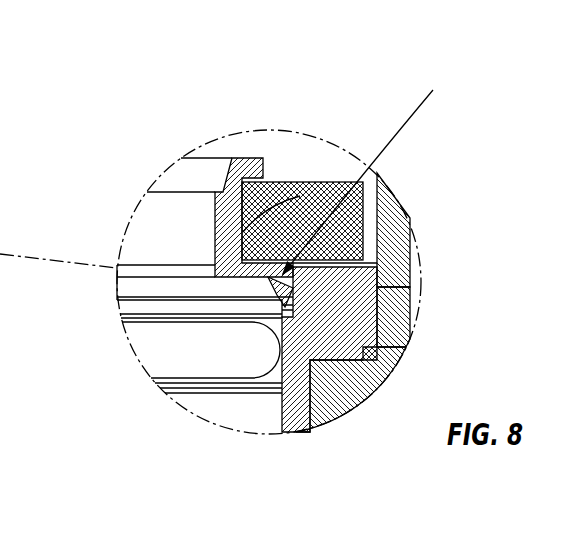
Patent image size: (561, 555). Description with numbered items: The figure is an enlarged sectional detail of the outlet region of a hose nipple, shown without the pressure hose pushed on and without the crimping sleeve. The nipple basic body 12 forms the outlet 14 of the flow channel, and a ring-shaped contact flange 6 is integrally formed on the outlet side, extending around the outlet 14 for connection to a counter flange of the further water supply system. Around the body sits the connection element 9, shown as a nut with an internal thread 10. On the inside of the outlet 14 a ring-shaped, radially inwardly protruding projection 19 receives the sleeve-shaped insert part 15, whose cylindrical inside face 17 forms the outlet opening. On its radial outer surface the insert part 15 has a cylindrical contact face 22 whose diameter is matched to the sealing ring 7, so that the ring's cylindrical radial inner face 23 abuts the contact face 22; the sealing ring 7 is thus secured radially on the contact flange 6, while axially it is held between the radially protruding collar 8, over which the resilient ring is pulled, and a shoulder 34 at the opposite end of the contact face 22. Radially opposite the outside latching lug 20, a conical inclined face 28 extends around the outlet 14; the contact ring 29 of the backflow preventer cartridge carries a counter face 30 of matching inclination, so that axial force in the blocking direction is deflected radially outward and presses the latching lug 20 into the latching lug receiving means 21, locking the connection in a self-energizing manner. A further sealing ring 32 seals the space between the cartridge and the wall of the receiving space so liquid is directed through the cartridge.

The contact flange 6 is at (378, 282).
The sealing ring 7 is at (305, 183).
The collar 8 is at (262, 168).
The connection element 9 is at (400, 314).
The internal thread 10 is at (385, 235).
The nipple basic body 12 is at (293, 413).
The outlet 14 is at (158, 247).
The insert part 15 is at (218, 192).
The inside face 17 is at (168, 192).
The projection 19 is at (340, 263).
The latching lug 20 is at (258, 303).
The latching lug receiving means 21 is at (310, 300).
The contact face 22 is at (285, 183).
The radial inner face 23 is at (306, 182).
The inclined face 28 is at (267, 285).
The contact ring 29 is at (125, 322).
The counter face 30 is at (117, 287).
The sealing ring 32 is at (213, 357).
The shoulder 34 is at (215, 265).